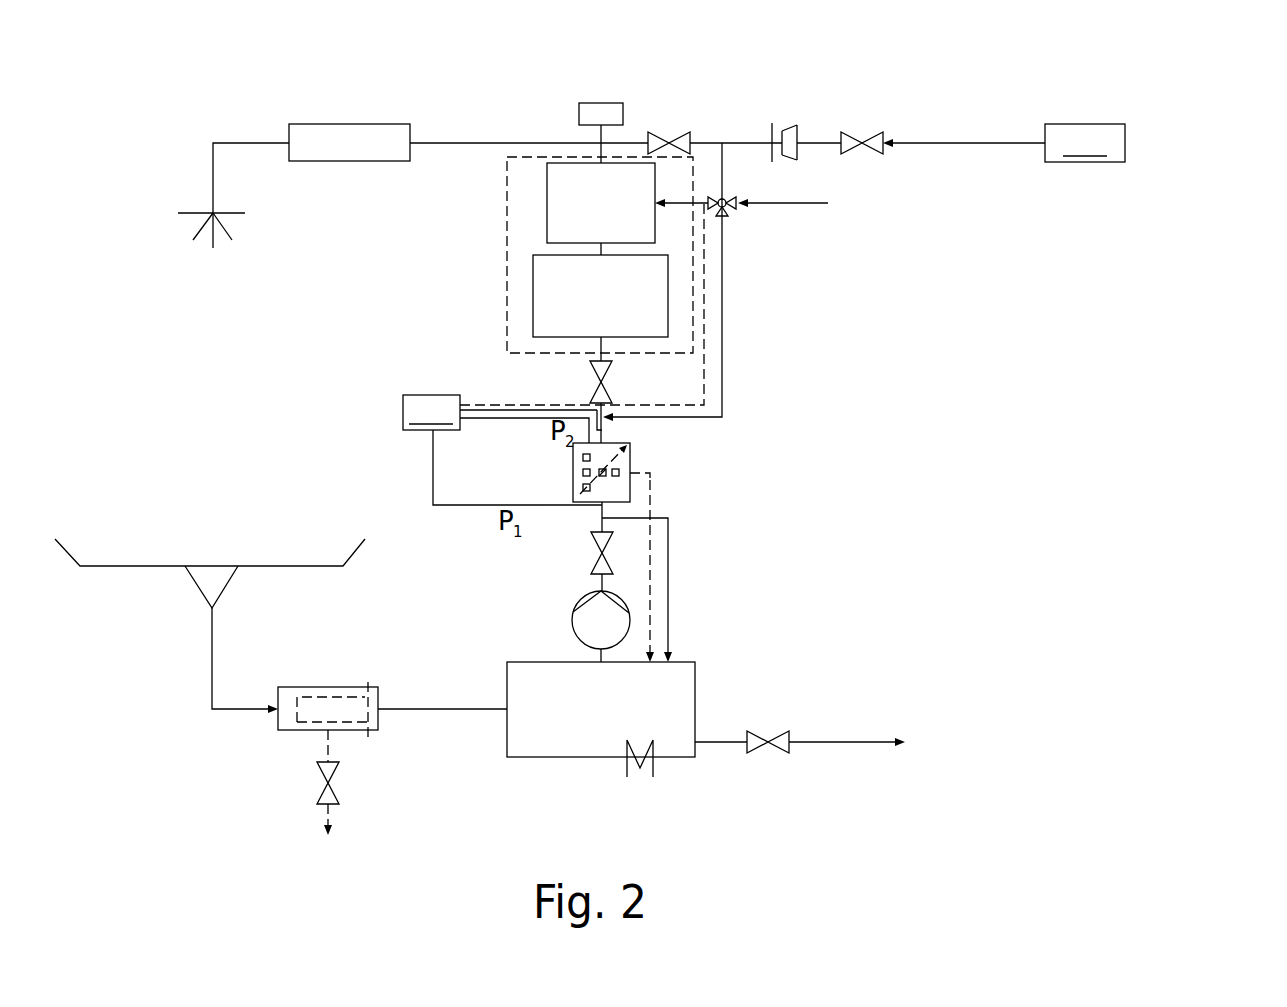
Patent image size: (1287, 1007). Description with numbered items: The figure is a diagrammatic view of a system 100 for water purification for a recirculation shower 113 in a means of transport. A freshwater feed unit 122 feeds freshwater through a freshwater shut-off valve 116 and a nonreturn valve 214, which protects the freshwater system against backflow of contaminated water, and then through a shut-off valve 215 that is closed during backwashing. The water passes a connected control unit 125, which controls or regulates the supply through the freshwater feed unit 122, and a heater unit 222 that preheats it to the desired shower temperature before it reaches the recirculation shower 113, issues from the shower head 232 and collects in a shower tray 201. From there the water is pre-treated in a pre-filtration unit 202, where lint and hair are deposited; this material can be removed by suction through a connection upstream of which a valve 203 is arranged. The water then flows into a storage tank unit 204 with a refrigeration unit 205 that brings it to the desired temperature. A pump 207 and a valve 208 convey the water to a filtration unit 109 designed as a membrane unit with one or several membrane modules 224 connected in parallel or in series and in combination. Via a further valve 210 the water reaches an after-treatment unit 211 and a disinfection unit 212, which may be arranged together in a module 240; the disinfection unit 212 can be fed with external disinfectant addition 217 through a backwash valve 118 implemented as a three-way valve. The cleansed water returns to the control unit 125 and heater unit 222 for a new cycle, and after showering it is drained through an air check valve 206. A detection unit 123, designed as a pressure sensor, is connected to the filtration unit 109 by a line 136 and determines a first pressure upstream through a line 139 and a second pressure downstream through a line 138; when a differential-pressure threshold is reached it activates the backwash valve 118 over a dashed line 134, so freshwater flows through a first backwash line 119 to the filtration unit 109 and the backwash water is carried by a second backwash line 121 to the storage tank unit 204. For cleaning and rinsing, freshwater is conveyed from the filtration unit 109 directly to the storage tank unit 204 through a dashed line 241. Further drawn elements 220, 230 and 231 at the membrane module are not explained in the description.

The system 100 is at (1157, 91).
The filtration unit 109 is at (573, 472).
The recirculation shower 113 is at (212, 212).
The freshwater shut-off valve 116 is at (870, 137).
The backwash valve 118 is at (727, 218).
The first backwash line 119 is at (722, 315).
The second backwash line 121 is at (668, 605).
The freshwater feed unit 122 is at (1009, 143).
The detection unit 123 is at (431, 412).
The control unit 125 is at (601, 103).
The line 134 is at (513, 404).
The line 136 is at (483, 418).
The line 138 is at (473, 410).
The line 139 is at (465, 507).
The shower tray 201 is at (325, 565).
The pre-filtration unit 202 is at (368, 687).
The valve 203 is at (338, 792).
The storage tank unit 204 is at (585, 758).
The refrigeration unit 205 is at (653, 772).
The air check valve 206 is at (778, 745).
The pump 207 is at (572, 622).
The valve 208 is at (590, 563).
The further valve 210 is at (593, 392).
The after-treatment unit 211 is at (533, 280).
The disinfection unit 212 is at (547, 187).
The nonreturn valve 214 is at (793, 127).
The shut-off valve 215 is at (660, 137).
The external disinfectant addition 217 is at (802, 203).
The control line 220 is at (652, 488).
The heater unit 222 is at (323, 123).
The membrane module 224 is at (632, 462).
The inlet port 230 is at (607, 432).
The outlet port 231 is at (607, 507).
The shower head 232 is at (212, 238).
The module 240 is at (507, 243).
The line 241 is at (652, 560).